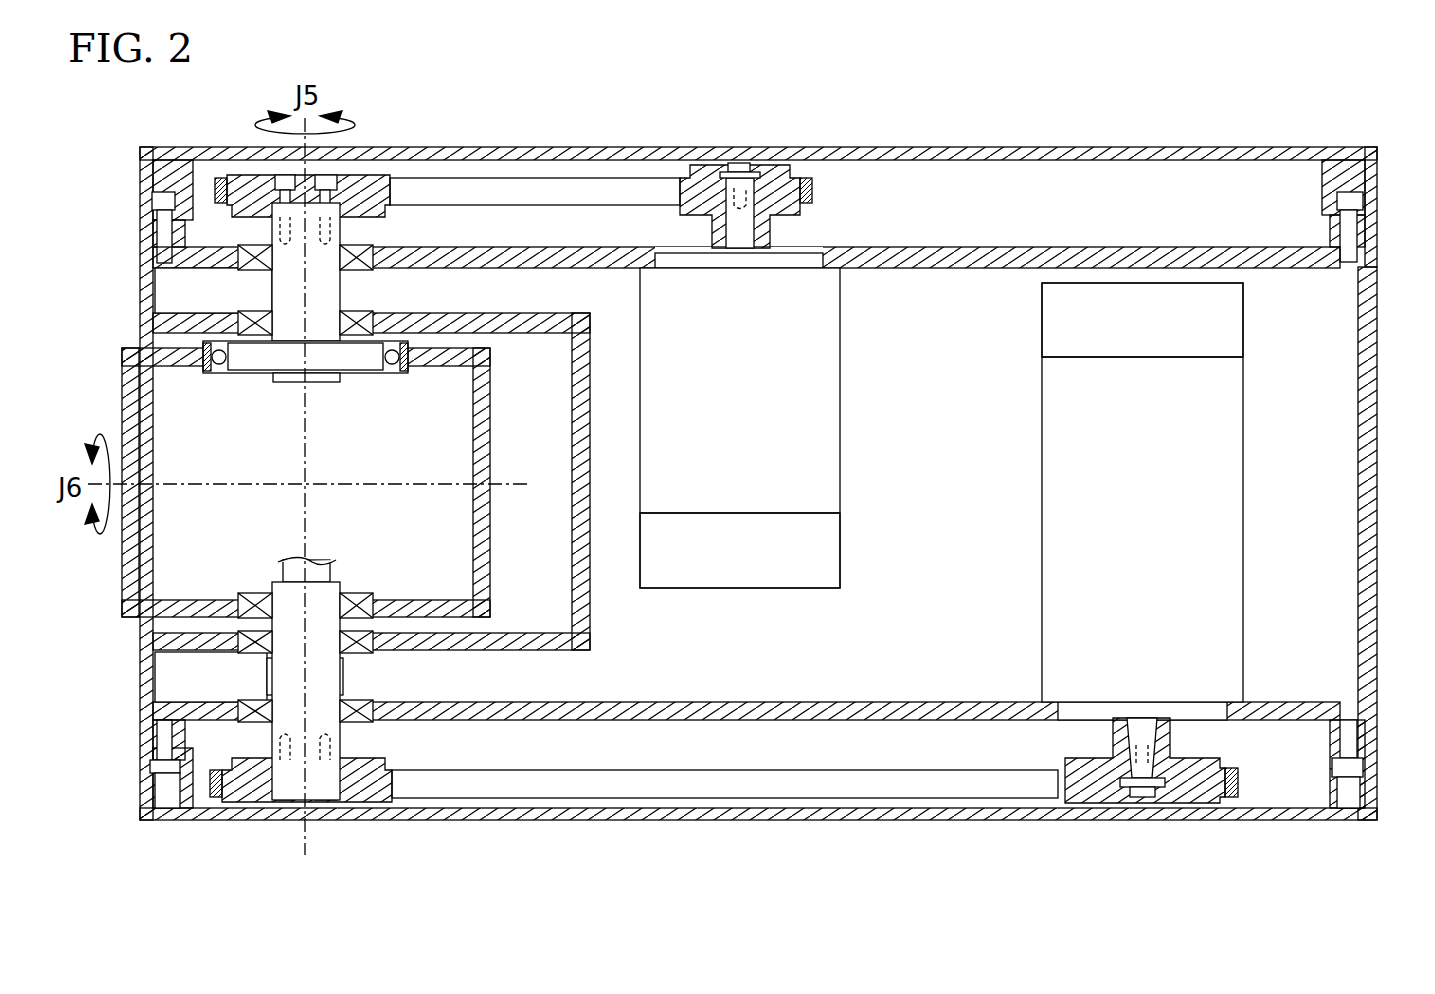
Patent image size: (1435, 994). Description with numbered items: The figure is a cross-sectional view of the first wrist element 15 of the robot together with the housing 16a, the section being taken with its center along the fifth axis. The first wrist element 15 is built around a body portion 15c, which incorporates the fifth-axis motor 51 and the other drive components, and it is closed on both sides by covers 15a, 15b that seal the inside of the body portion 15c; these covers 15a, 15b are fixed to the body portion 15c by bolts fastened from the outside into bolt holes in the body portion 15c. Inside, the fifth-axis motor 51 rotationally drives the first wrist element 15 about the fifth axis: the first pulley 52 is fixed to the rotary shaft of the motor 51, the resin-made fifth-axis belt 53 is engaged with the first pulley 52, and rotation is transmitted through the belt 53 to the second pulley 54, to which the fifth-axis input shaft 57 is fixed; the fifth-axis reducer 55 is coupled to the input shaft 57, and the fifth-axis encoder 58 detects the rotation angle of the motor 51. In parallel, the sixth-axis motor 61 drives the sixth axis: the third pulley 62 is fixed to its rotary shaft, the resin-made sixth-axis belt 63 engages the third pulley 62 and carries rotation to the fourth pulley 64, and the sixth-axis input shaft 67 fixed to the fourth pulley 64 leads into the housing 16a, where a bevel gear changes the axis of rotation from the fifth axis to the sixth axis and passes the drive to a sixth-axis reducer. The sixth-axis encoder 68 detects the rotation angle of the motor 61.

The first wrist element 15 is at (786, 479).
The cover 15a is at (1082, 147).
The cover 15b is at (912, 820).
The body portion 15c is at (1377, 406).
The housing 16a is at (491, 575).
The J5 axis motor 51 is at (800, 412).
The first pulley 52 is at (770, 168).
The J5 axis belt 53 is at (527, 190).
The second pulley 54 is at (250, 175).
The J5 axis reducer 55 is at (262, 358).
The J5 axis input shaft 57 is at (265, 285).
The J5 axis encoder 58 is at (748, 572).
The J6 axis motor 61 is at (1210, 500).
The third pulley 62 is at (1075, 805).
The J6 axis belt 63 is at (657, 776).
The fourth pulley 64 is at (243, 803).
The J6 axis input shaft 67 is at (275, 680).
The J6 axis encoder 68 is at (1060, 318).